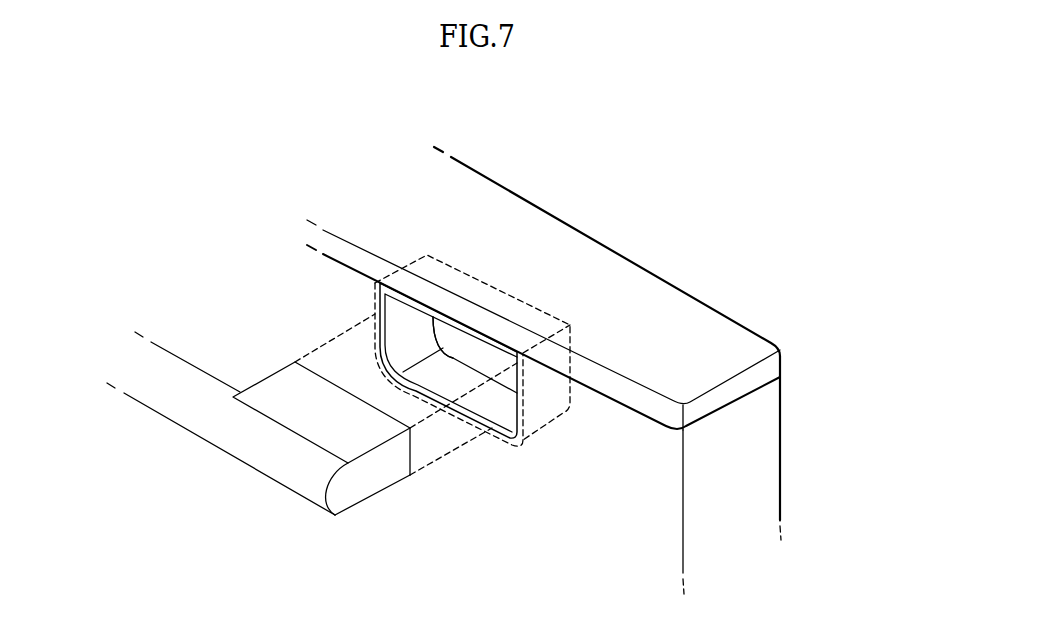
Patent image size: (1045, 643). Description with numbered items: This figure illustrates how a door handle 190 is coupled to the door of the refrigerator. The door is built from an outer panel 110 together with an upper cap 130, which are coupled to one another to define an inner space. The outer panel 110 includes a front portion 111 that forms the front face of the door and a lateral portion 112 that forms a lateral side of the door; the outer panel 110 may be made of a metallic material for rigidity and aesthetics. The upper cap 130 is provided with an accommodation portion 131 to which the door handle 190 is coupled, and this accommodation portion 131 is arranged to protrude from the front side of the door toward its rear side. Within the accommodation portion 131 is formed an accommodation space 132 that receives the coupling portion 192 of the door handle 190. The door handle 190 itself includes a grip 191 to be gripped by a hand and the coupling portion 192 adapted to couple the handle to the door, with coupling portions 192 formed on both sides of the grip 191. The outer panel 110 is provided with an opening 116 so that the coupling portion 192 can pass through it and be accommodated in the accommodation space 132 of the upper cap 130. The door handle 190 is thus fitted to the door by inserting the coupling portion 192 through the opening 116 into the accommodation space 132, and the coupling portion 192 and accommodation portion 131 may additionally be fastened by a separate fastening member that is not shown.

The outer panel 110 is at (581, 370).
The front portion 111 is at (658, 492).
The lateral portion 112 is at (773, 404).
The opening 116 is at (490, 416).
The upper cap 130 is at (680, 310).
The accommodation portion 131 is at (553, 320).
The accommodation space 132 is at (462, 346).
The door handle 190 is at (297, 416).
The grip 191 is at (185, 370).
The coupling portion 192 is at (335, 428).